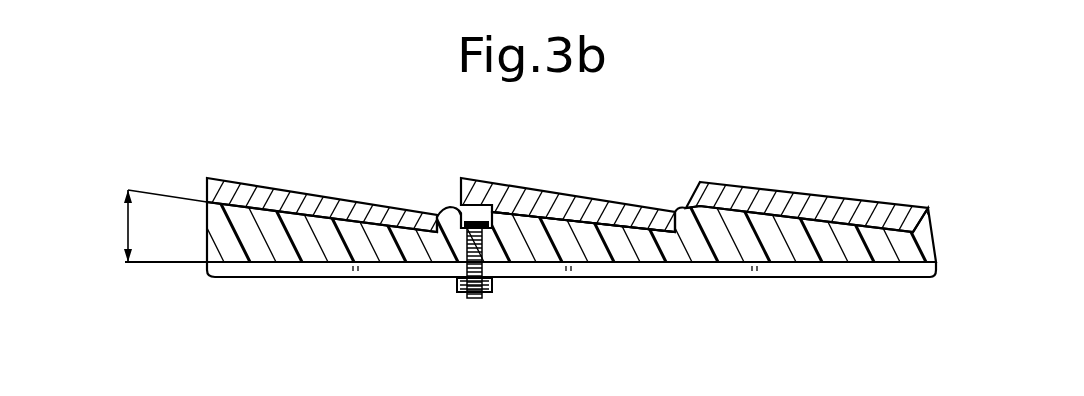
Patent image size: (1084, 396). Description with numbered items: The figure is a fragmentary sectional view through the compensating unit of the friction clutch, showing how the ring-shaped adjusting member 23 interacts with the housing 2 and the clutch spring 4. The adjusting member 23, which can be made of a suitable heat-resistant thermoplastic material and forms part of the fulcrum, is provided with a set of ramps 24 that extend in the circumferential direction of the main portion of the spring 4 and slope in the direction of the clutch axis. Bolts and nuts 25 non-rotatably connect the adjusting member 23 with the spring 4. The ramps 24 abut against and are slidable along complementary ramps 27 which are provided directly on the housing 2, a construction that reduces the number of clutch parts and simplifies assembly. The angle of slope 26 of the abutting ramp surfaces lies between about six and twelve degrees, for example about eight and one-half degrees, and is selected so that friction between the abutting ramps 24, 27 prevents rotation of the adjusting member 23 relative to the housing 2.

The housing 2 is at (840, 222).
The spring 4 is at (252, 268).
The adjusting member 23 is at (877, 250).
The ramps 24 is at (565, 216).
The bolts and nuts 25 is at (493, 290).
The angle of slope 26 is at (127, 229).
The complementary ramps 27 is at (622, 234).